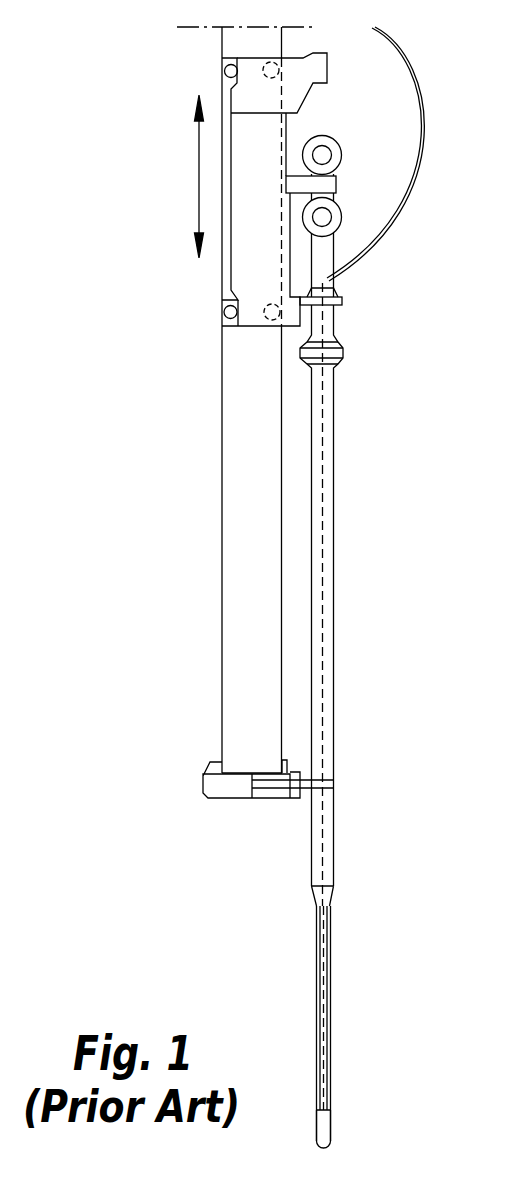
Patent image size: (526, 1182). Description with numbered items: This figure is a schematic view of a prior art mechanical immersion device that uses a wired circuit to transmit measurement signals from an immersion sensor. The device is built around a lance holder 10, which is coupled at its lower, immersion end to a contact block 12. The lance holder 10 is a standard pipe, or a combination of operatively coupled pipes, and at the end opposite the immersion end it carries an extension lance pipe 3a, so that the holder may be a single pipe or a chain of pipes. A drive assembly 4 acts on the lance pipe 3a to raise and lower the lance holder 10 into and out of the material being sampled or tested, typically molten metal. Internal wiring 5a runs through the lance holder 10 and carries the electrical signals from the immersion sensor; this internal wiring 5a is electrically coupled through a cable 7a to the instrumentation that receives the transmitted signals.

The extension lance pipe 3a is at (312, 588).
The drive assembly 4 is at (179, 188).
The internal wiring 5a is at (323, 445).
The cable 7a is at (421, 82).
The lance holder 10 is at (317, 959).
The contact block 12 is at (330, 1127).